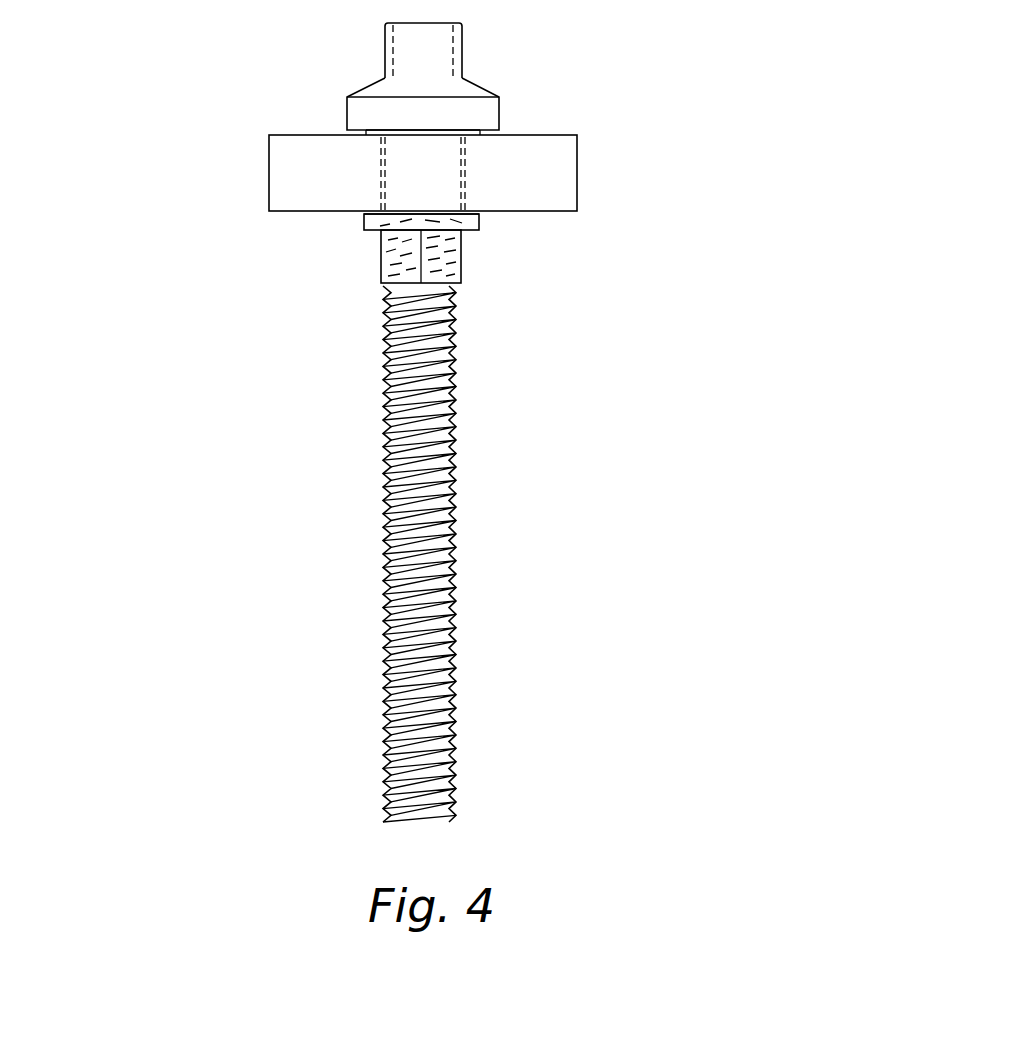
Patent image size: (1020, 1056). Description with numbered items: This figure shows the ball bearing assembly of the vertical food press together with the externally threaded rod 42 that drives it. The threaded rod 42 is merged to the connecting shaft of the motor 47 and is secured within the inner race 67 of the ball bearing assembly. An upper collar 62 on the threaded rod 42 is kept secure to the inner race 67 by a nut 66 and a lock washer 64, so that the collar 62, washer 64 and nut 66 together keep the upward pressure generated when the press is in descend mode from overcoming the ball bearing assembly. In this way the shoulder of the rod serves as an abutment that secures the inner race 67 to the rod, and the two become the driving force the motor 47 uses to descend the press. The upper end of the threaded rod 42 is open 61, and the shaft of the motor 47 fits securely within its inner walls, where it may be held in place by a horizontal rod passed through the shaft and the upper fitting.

The threaded rod 42 is at (390, 408).
The motor 47 is at (527, 172).
The open upper end 61 is at (452, 45).
The upper collar 62 is at (475, 104).
The lock washer 64 is at (480, 220).
The nut 66 is at (460, 265).
The inner race 67 is at (365, 214).